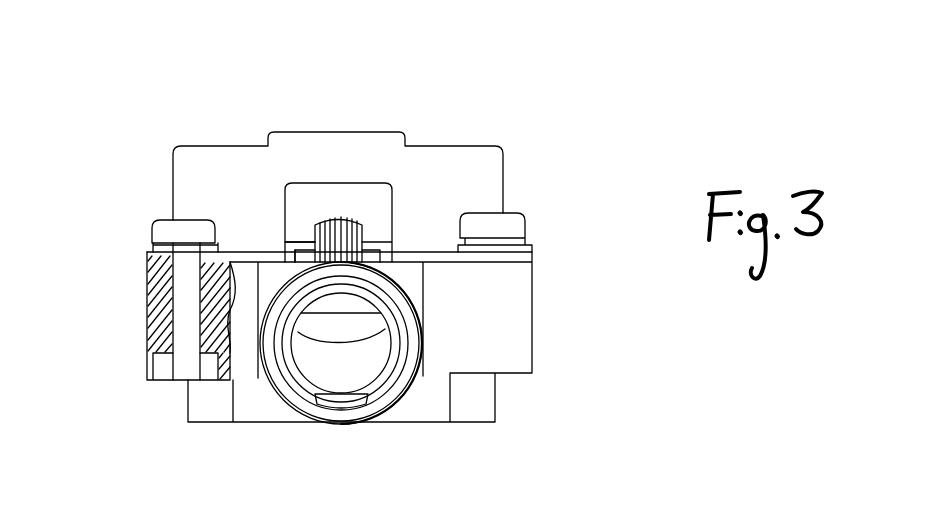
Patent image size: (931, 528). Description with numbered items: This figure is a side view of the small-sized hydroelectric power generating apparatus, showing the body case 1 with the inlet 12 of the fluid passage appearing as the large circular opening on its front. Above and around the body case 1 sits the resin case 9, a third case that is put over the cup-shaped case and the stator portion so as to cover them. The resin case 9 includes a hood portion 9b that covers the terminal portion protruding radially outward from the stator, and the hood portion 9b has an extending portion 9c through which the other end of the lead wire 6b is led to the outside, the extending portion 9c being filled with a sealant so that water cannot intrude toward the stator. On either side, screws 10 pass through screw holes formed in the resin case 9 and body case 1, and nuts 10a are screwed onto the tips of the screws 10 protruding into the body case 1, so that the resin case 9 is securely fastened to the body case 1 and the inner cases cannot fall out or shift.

The body case 1 is at (517, 318).
The lead wire 6b is at (335, 220).
The resin case 9 is at (483, 163).
The hood portion 9b is at (383, 207).
The extending portion 9c is at (300, 252).
The screws 10 is at (165, 230).
The nuts 10a is at (153, 370).
The inlet 12 is at (385, 390).